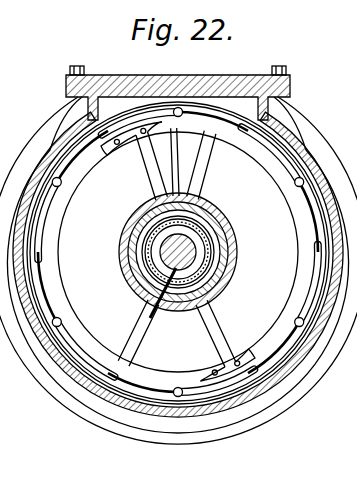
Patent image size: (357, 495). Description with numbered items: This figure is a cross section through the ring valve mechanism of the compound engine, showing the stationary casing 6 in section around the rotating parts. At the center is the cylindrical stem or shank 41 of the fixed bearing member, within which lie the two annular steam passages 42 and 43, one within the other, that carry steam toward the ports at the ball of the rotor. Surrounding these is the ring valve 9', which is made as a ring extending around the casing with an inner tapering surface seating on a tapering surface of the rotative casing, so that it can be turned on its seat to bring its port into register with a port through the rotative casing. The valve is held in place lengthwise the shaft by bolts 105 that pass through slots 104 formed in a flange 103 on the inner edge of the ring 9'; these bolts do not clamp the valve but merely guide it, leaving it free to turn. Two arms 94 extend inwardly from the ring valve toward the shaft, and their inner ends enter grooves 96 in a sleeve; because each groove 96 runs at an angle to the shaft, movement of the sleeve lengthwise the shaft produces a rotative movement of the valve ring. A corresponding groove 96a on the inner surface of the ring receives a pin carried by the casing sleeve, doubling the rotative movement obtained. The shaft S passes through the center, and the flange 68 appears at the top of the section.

The stationary casing 6 is at (291, 154).
The flange plate 68 is at (128, 78).
The flange 103 is at (228, 120).
The slots 104 is at (134, 117).
The bolts 105 is at (180, 109).
The ring valve 9' is at (178, 252).
The arms 94 is at (145, 164).
The grooves 96 is at (177, 196).
The corresponding groove 96a is at (212, 176).
The annular passage 43 is at (205, 236).
The annular passage 42 is at (205, 246).
The cylindrical stem or shank 41 is at (214, 262).
The shaft S is at (173, 283).